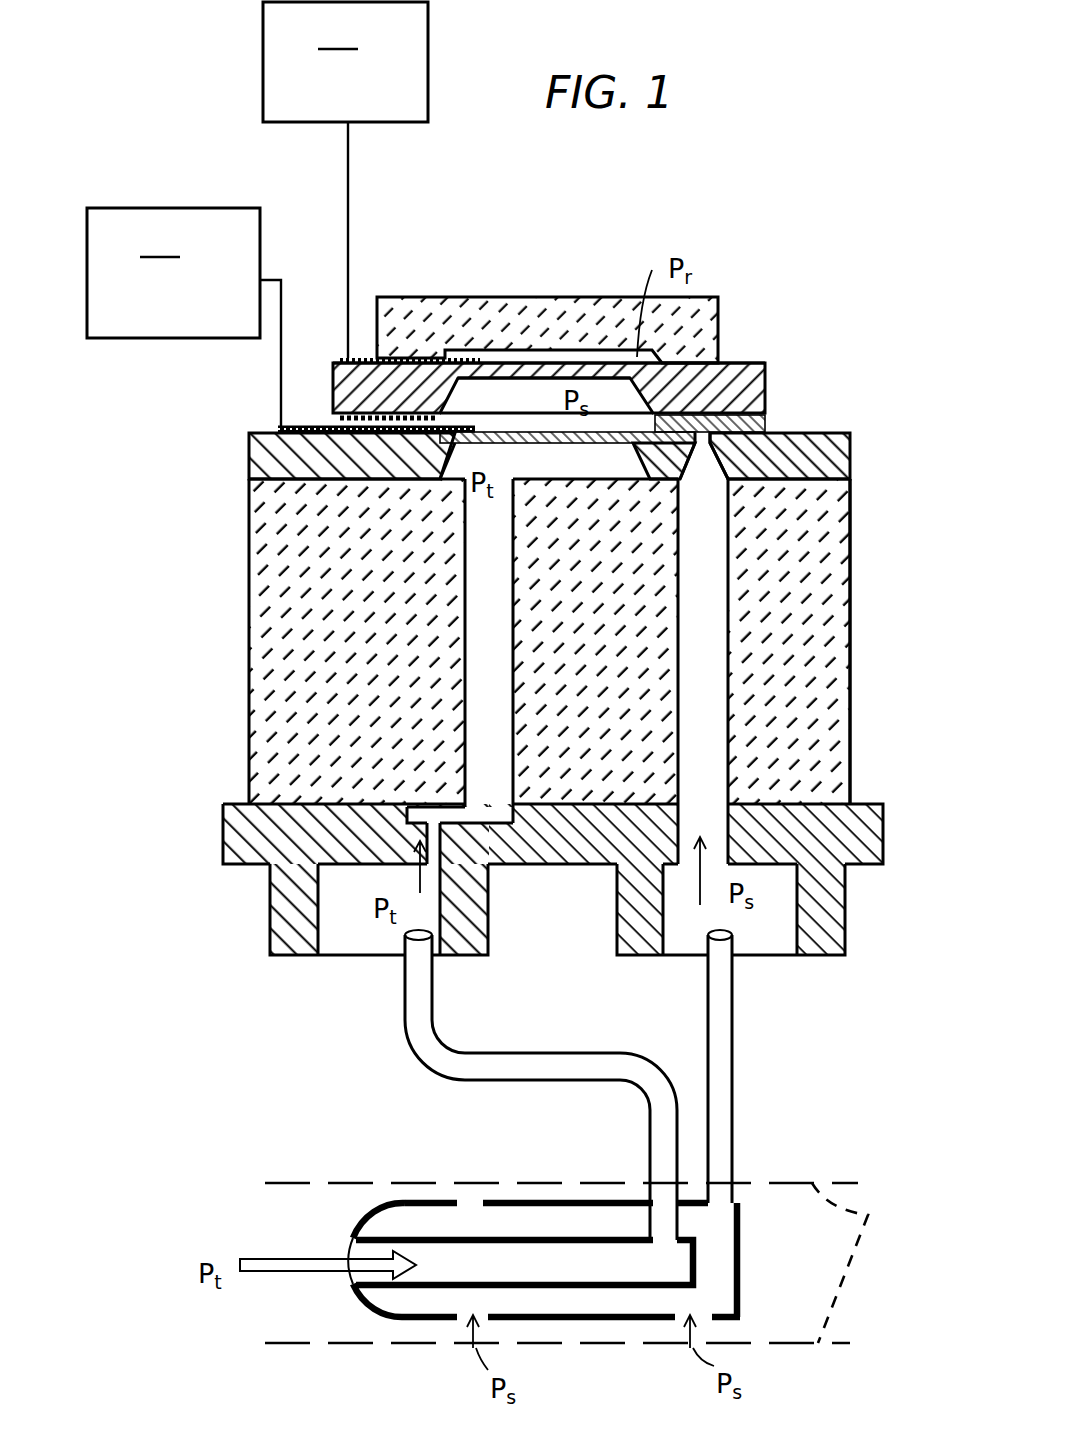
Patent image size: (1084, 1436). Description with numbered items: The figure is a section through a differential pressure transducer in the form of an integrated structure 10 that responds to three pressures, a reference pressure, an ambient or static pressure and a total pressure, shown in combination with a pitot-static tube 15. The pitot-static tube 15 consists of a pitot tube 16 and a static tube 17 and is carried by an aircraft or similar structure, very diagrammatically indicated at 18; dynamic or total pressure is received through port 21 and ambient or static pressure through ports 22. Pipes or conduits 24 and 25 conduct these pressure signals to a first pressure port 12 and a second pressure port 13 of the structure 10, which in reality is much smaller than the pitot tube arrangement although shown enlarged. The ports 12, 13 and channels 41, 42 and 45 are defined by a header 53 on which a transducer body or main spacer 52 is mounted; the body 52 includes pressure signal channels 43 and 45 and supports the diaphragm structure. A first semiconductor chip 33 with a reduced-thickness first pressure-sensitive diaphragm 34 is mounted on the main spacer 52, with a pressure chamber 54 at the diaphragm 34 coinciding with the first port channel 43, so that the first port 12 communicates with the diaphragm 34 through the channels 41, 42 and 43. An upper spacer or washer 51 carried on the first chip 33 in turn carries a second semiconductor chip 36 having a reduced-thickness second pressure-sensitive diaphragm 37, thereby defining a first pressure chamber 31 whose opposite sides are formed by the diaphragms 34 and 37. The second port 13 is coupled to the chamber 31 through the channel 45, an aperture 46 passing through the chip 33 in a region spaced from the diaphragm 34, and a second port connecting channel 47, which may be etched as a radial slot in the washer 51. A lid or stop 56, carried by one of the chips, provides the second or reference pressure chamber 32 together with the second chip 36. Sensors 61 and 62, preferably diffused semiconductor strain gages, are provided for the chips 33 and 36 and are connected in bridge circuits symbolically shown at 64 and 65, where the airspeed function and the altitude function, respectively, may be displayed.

The integrated structure 10 is at (290, 620).
The first pressure port 12 is at (350, 930).
The second pressure port 13 is at (790, 918).
The pitot-static tube 15 is at (545, 1210).
The pitot tube 16 is at (420, 1292).
The static tube 17 is at (612, 1200).
The aircraft 18 is at (587, 1263).
The total pressure port 21 is at (368, 1248).
The static pressure port 22 is at (467, 1200).
The pipe or conduit 24 is at (580, 1052).
The pipe or conduit 25 is at (734, 1083).
The first pressure chamber 31 is at (495, 397).
The second pressure chamber 32 is at (577, 357).
The first semiconductor chip 33 is at (250, 462).
The first pressure-sensitive diaphragm 34 is at (540, 443).
The second semiconductor chip 36 is at (766, 392).
The second pressure-sensitive diaphragm 37 is at (538, 372).
The channel 41 is at (402, 822).
The channel 42 is at (432, 815).
The first port channel 43 is at (478, 612).
The second port channel 45 is at (715, 648).
The aperture 46 is at (702, 470).
The second port connecting channel 47 is at (713, 400).
The spacer or washer 51 is at (768, 428).
The transducer body 52 is at (851, 545).
The header 53 is at (885, 823).
The pressure chamber 54 is at (450, 465).
The lid or stop 56 is at (443, 297).
The sensor 61 is at (285, 412).
The sensor 62 is at (400, 300).
The bridge circuit display 64 is at (173, 273).
The bridge circuit display 65 is at (345, 180).